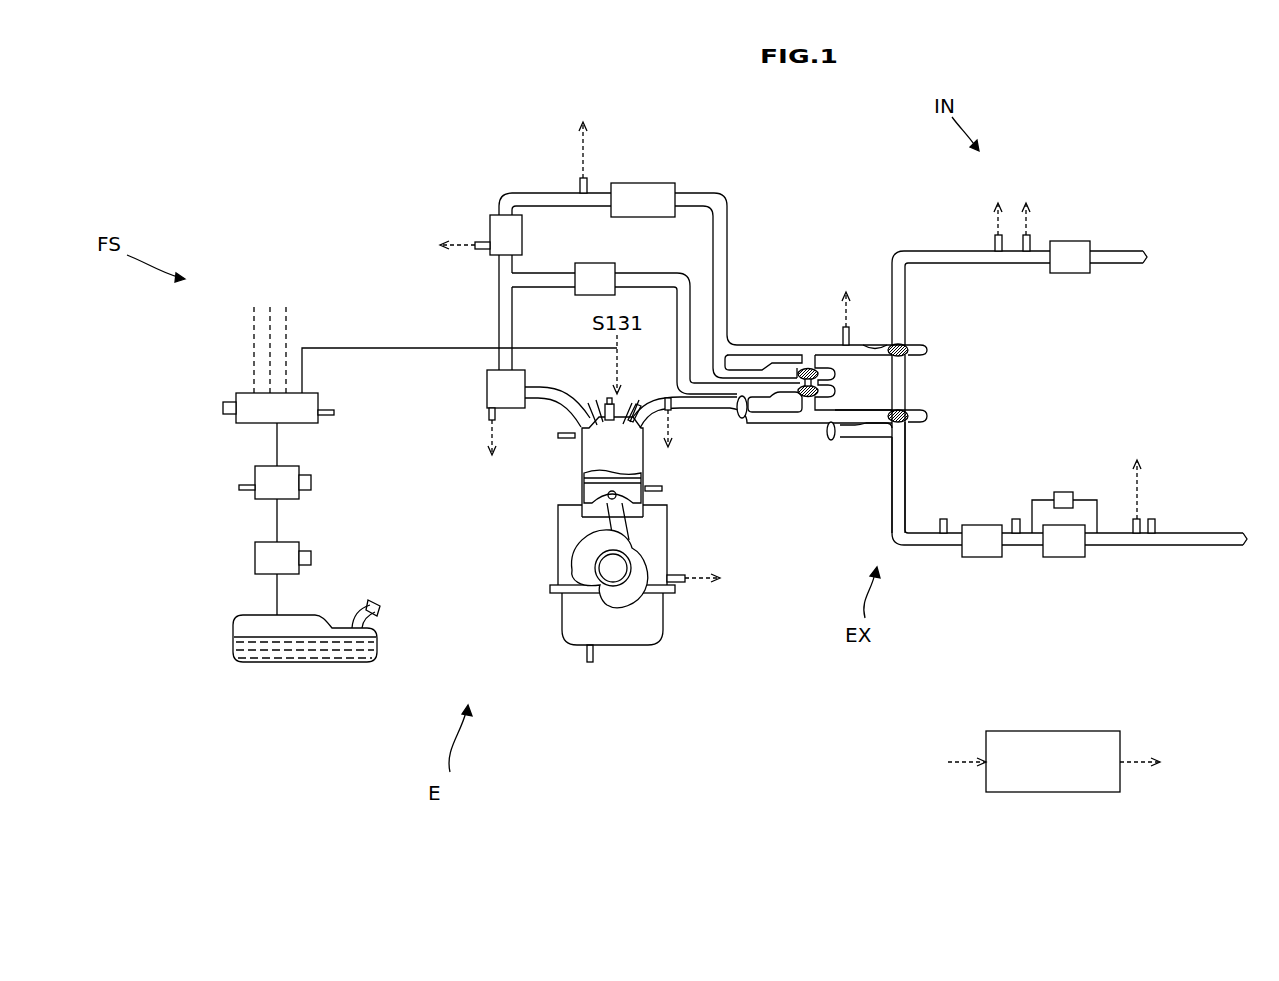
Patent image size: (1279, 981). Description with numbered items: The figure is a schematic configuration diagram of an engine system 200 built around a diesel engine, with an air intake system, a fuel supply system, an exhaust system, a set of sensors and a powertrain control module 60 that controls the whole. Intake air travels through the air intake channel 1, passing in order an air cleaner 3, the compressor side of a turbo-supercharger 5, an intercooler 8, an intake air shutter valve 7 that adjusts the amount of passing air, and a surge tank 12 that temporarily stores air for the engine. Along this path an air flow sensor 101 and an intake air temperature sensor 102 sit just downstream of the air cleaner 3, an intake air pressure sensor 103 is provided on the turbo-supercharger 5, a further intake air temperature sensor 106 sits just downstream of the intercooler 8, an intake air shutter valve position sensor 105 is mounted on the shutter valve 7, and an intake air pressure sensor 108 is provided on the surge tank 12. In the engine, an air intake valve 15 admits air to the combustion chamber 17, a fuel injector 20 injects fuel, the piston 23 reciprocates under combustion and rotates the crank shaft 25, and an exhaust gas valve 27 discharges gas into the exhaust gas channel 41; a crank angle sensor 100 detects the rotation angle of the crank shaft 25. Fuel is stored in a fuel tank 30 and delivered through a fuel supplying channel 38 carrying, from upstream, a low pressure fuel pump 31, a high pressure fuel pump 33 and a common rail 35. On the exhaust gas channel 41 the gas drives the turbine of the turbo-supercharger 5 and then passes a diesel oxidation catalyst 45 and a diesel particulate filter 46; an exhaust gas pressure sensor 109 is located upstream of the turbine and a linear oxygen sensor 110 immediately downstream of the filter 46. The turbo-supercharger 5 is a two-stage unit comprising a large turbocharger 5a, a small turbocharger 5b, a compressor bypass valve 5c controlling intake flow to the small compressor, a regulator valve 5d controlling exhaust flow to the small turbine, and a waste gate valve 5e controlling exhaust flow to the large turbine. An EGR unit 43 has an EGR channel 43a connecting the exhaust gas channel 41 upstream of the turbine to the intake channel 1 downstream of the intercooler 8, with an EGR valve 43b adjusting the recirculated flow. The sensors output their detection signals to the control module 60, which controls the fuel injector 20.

The air intake channel 1 is at (499, 318).
The air cleaner 3 is at (1090, 246).
The turbo-supercharger 5 is at (865, 417).
The large turbocharger 5a is at (912, 345).
The small turbocharger 5b is at (836, 374).
The compressor bypass valve 5c is at (757, 345).
The regulator valve 5d is at (742, 418).
The waste gate valve 5e is at (831, 440).
The intake air shutter valve 7 is at (490, 222).
The intercooler 8 is at (660, 183).
The surge tank 12 is at (487, 384).
The air intake valve 15 is at (583, 428).
The combustion chamber 17 is at (623, 460).
The fuel injector 20 is at (606, 404).
The piston 23 is at (583, 495).
The crank shaft 25 is at (613, 568).
The exhaust gas valve 27 is at (635, 404).
The fuel tank 30 is at (234, 626).
The low pressure fuel pump 31 is at (255, 557).
The high pressure fuel pump 33 is at (299, 471).
The common rail 35 is at (236, 416).
The fuel supplying channel 38 is at (378, 348).
The exhaust gas channel 41 is at (892, 506).
The EGR unit 43 is at (656, 312).
The EGR channel 43a is at (688, 312).
The EGR valve 43b is at (610, 265).
The diesel oxidation catalyst 45 is at (982, 558).
The diesel particulate filter 46 is at (1064, 558).
The PCM 60 is at (1092, 731).
The crank angle sensor 100 is at (680, 575).
The air flow sensor 101 is at (1031, 243).
The intake air temperature sensor 102 is at (995, 245).
The intake air pressure sensor 103 is at (843, 330).
The intake air shutter valve position sensor 105 is at (481, 250).
The intake air temperature sensor 106 is at (580, 185).
The intake air pressure sensor 108 is at (489, 412).
The exhaust gas pressure sensor 109 is at (671, 409).
The linear O2 sensor 110 is at (1133, 525).
The engine system 200 is at (1212, 177).